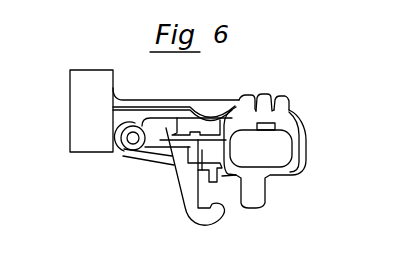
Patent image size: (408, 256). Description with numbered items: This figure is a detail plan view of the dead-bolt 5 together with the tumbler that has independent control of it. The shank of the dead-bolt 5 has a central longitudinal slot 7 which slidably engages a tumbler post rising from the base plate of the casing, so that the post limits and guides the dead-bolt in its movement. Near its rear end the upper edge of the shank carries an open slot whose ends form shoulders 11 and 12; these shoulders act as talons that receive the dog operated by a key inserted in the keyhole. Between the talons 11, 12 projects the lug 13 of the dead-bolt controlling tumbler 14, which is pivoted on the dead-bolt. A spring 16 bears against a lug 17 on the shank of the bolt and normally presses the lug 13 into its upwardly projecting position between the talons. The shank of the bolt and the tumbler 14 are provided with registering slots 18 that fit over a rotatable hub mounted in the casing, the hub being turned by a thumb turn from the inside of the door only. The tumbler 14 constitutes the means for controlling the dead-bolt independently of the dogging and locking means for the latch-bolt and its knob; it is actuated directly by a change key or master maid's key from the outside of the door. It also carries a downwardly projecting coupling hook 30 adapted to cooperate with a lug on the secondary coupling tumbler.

The dead-bolt 5 is at (70, 122).
The central longitudinal slot 7 is at (184, 124).
The shoulder 11 is at (247, 97).
The shoulder 12 is at (285, 98).
The lug 13 is at (265, 97).
The dead-bolt controlling tumbler 14 is at (286, 167).
The spring 16 is at (150, 160).
The lug 17 is at (197, 180).
The registering slots 18 is at (272, 151).
The coupling hook 30 is at (183, 195).